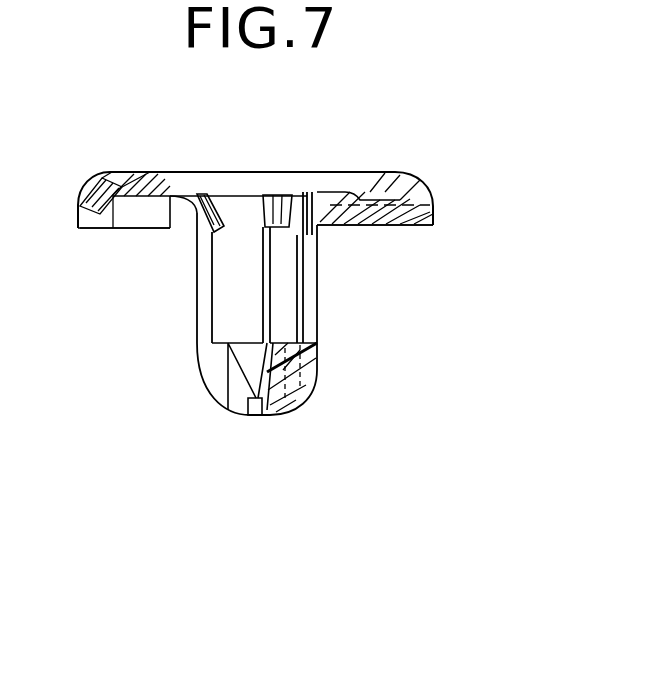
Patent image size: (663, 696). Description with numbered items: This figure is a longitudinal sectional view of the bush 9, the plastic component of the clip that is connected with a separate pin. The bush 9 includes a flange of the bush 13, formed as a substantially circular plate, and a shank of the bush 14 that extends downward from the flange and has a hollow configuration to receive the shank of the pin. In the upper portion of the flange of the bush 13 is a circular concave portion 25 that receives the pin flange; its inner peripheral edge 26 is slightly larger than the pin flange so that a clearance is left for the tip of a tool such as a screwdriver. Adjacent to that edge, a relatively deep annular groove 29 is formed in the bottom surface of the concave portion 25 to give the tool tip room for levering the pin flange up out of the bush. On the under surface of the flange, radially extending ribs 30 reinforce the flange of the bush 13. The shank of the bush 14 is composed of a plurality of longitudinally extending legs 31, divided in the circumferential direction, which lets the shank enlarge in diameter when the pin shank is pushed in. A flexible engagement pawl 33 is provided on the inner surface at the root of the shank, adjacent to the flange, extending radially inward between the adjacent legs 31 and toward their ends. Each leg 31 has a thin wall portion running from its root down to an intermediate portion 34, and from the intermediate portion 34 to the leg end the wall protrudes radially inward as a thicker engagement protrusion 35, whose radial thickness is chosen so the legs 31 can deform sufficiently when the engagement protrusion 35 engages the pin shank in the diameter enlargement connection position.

The bush 9 is at (440, 150).
The flange of the bush 13 is at (431, 206).
The shank of the bush 14 is at (190, 240).
The concave portion 25 is at (367, 190).
The inner peripheral edge of the concave portion 26 is at (127, 188).
The annular groove 29 is at (147, 192).
The ribs 30 is at (130, 225).
The legs 31 is at (318, 272).
The engagement pawl 33 is at (280, 190).
The intermediate portion 34 is at (290, 322).
The engagement protrusion 35 is at (217, 382).